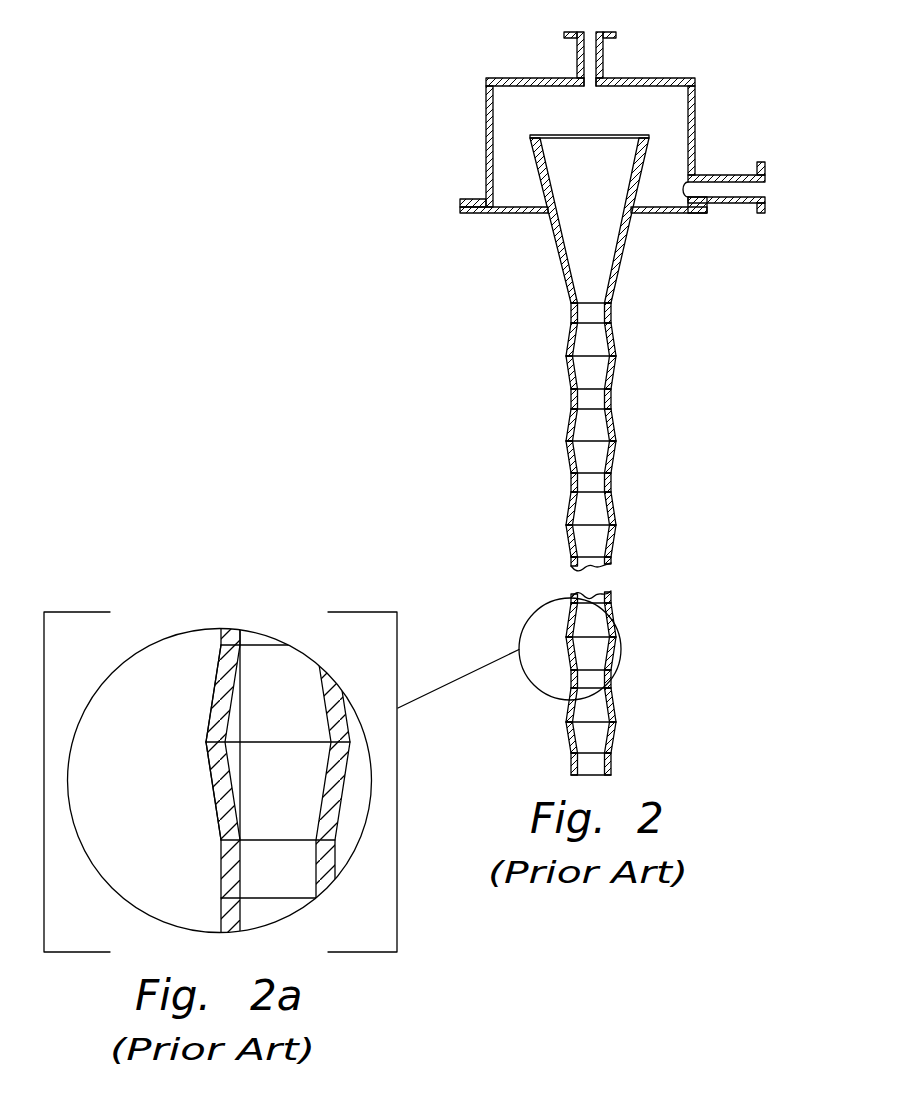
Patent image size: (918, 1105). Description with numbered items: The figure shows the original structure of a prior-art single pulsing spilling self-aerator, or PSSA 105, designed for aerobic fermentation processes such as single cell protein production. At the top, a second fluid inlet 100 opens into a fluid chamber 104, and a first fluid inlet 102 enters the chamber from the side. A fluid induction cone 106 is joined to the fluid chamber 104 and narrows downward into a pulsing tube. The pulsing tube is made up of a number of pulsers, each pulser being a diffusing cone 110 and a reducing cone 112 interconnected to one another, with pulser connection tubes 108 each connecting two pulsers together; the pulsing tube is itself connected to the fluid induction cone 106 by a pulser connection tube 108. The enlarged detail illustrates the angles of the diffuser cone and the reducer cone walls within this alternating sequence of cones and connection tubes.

The second fluid inlet 100 is at (577, 58).
The first fluid inlet 102 is at (765, 185).
The fluid chamber 104 is at (486, 117).
The single pulsing spilling self-aerator (PSSA) 105 is at (568, 348).
The fluid induction cone 106 is at (620, 263).
The pulser connection tubes 108 is at (568, 399).
The diffusing cone (diffuser) 110 is at (610, 430).
The reducing cone (reducer) 112 is at (568, 547).